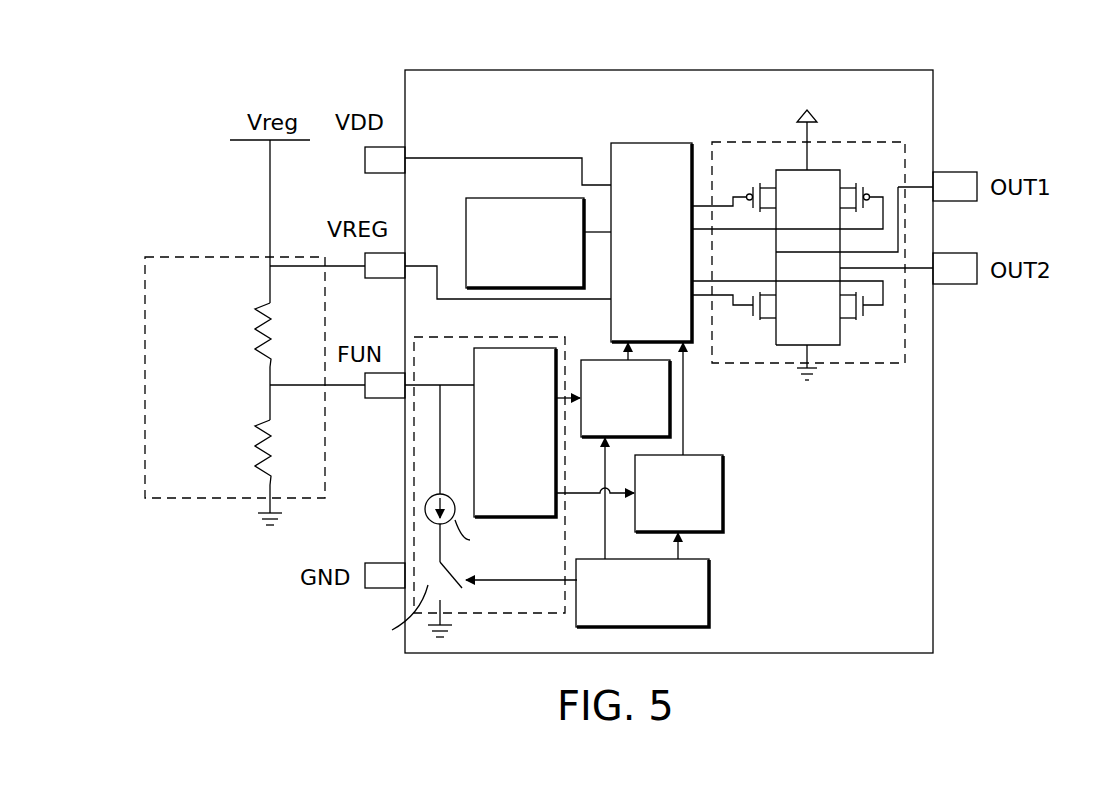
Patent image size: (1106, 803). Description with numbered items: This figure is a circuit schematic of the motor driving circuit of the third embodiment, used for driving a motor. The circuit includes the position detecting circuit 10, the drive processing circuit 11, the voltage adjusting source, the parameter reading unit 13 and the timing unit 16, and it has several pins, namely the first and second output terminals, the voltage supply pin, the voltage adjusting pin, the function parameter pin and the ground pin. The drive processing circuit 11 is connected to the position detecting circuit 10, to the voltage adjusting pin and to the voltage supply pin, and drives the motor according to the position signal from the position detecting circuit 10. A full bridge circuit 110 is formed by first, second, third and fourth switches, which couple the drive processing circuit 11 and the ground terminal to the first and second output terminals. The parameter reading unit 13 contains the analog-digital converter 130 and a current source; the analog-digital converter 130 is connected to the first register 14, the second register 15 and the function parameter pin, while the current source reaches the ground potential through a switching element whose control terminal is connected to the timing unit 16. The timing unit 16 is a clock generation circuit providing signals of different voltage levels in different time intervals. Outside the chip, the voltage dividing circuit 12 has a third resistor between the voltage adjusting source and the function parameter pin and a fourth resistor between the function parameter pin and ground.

The position detecting circuit 10 is at (466, 229).
The drive processing circuit 11 is at (652, 143).
The full bridge circuit 110 is at (748, 141).
The voltage dividing circuit 12 is at (170, 256).
The parameter reading unit 13 is at (414, 496).
The analog-digital converter 130 is at (492, 348).
The first register 14 is at (670, 397).
The second register 15 is at (723, 493).
The timing unit 16 is at (709, 590).